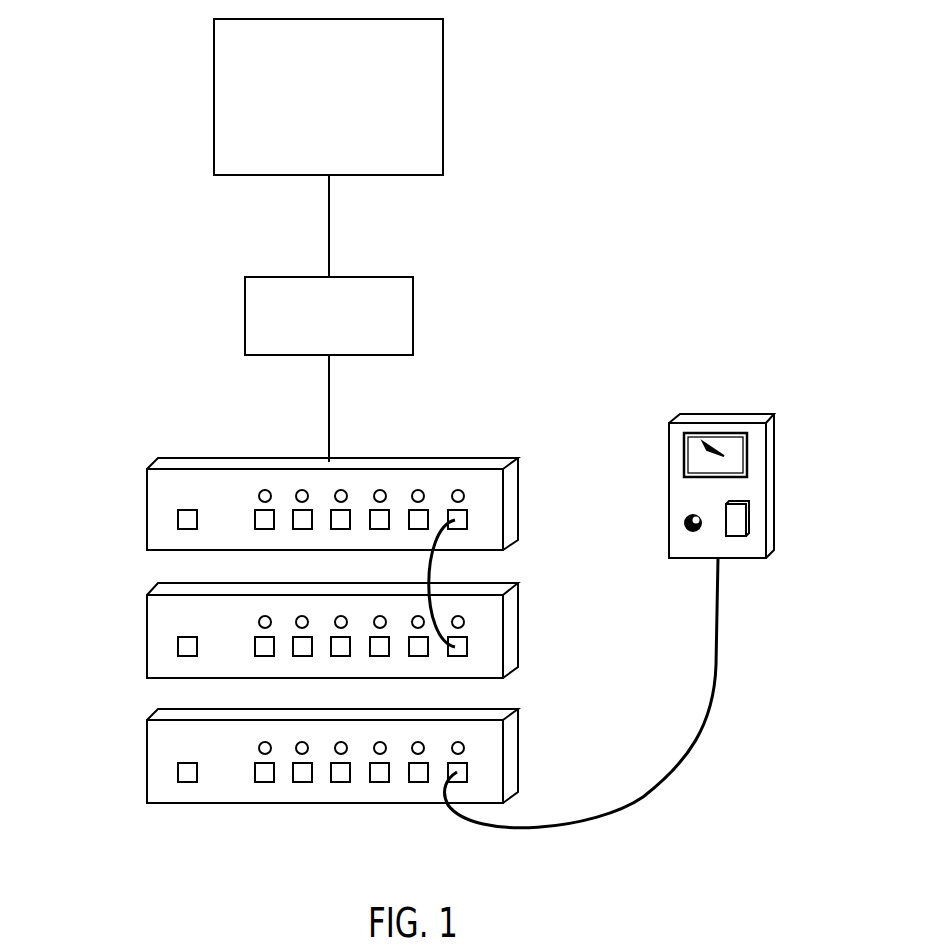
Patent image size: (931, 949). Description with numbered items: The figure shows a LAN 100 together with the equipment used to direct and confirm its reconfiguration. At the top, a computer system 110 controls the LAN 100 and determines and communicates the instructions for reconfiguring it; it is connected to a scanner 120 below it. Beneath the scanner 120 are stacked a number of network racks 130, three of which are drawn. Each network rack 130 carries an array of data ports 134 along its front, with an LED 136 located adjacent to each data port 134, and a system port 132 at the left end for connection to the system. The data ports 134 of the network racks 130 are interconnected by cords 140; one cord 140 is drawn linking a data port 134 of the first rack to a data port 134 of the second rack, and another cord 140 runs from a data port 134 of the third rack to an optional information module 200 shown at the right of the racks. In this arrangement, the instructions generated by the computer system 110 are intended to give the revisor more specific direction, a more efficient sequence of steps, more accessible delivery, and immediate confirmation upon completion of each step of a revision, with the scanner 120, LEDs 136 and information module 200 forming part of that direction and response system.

The LAN 100 is at (590, 335).
The computer system 110 is at (443, 97).
The scanner 120 is at (413, 290).
The network rack 130 is at (273, 590).
The system port 132 is at (177, 518).
The data port 134 is at (254, 518).
The LED 136 is at (259, 490).
The cord 140 is at (433, 567).
The information module 200 is at (712, 417).